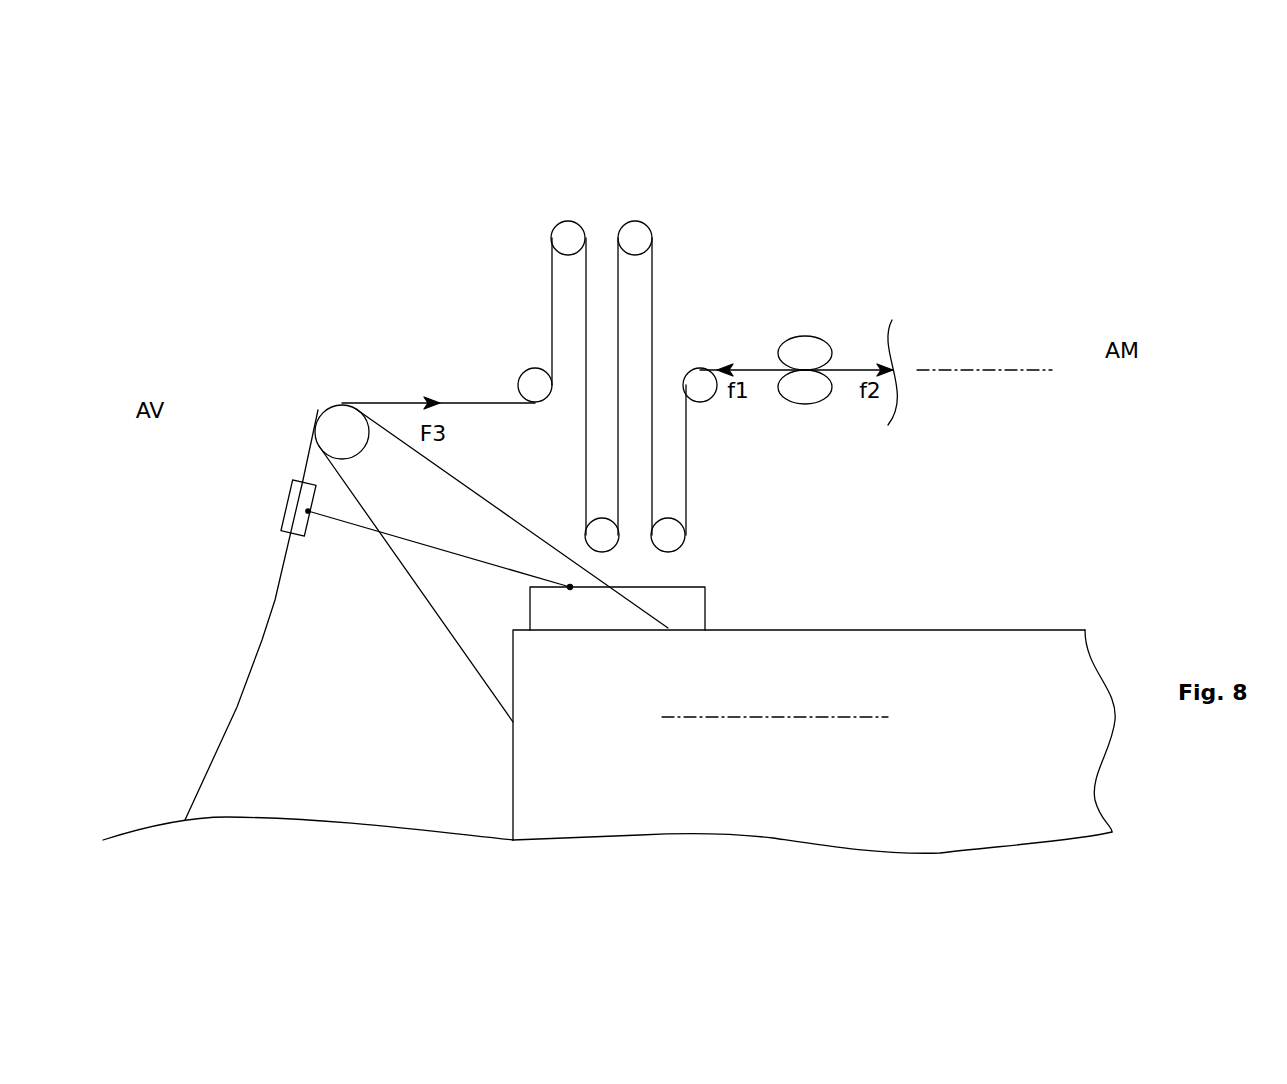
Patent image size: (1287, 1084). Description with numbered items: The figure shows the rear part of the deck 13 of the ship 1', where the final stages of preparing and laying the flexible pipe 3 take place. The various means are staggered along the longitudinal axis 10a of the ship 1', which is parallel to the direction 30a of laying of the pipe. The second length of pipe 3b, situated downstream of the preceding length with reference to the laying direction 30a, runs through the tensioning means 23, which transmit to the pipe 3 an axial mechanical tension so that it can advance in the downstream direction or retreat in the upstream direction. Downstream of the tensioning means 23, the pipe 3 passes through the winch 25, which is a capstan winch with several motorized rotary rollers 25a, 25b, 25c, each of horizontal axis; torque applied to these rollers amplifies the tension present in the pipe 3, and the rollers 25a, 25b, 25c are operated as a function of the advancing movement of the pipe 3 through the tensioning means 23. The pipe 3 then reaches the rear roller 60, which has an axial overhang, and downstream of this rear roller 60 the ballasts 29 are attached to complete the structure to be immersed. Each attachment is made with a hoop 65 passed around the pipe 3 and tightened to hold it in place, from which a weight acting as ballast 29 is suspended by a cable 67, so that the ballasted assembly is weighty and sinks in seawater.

The ship 1' is at (717, 649).
The pipe 3 is at (243, 690).
The second length of pipe 3b is at (552, 302).
The longitudinal axis of the ship 10a is at (773, 717).
The deck 13 is at (748, 630).
The tensioning means 23 is at (805, 353).
The winch 25 is at (628, 330).
The motorized rotary roller 25a is at (668, 535).
The motorized rotary roller 25b is at (635, 240).
The motorized rotary roller 25c is at (600, 520).
The ballast 29 is at (569, 608).
The direction of laying 30a is at (985, 370).
The rear roller 60 is at (342, 433).
The hoop 65 is at (287, 505).
The cable 67 is at (423, 544).